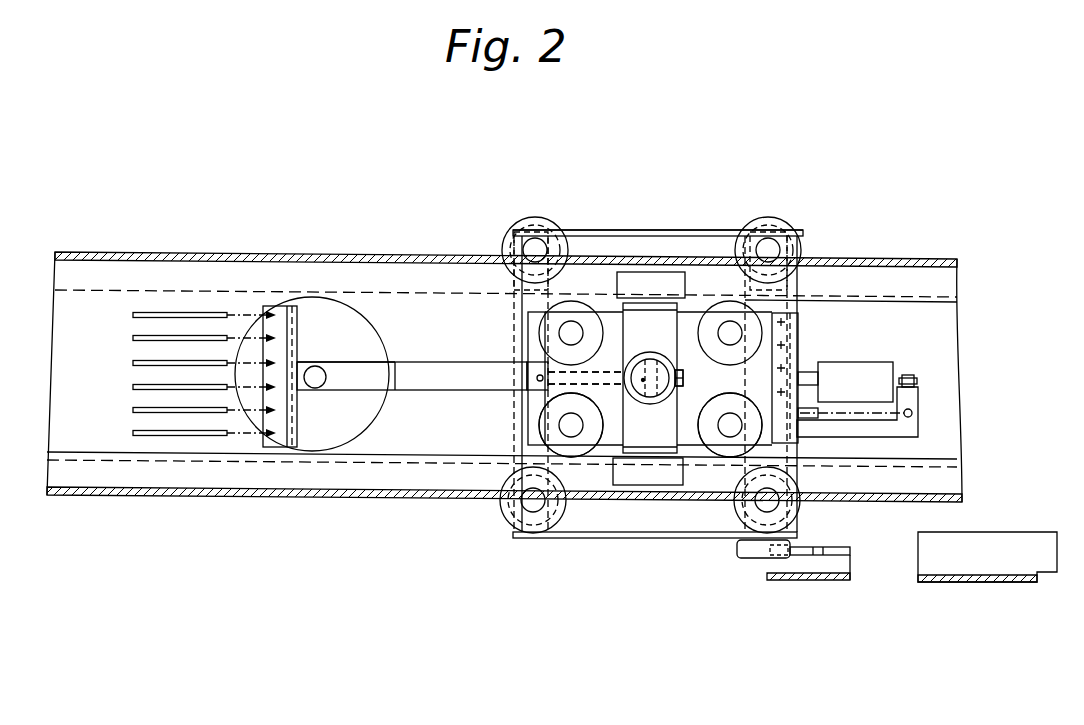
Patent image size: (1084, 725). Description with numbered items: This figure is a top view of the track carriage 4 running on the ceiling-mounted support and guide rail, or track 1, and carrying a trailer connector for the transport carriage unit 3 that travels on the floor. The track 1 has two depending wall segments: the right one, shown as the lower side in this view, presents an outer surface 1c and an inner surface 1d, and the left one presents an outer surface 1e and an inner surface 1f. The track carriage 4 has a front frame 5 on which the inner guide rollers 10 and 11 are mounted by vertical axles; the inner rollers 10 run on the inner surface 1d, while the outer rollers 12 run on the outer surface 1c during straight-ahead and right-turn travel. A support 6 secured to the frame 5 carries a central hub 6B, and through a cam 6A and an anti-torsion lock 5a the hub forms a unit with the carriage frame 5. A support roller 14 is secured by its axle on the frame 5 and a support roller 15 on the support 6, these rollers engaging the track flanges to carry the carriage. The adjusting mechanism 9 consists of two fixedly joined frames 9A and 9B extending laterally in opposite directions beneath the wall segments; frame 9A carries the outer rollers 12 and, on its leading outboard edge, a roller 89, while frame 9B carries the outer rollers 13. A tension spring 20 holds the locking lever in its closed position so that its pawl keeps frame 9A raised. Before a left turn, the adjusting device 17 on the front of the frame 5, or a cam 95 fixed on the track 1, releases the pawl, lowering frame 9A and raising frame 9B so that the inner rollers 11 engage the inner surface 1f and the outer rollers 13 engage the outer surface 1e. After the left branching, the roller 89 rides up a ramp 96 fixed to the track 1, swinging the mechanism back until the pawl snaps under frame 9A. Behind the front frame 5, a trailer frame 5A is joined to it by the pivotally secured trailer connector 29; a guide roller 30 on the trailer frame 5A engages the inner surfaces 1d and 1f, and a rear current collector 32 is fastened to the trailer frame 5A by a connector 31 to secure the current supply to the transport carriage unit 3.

The support and guide rail 1 is at (75, 254).
The outer surface 1c is at (948, 465).
The inner surface 1d is at (948, 458).
The outer surface 1e is at (940, 293).
The inner surface 1f is at (940, 303).
The transport carriage unit 3 is at (643, 381).
The track carriage 4 is at (607, 397).
The front frame 5 is at (800, 337).
The trailer frame 5A is at (341, 362).
The anti-torsion lock 5a is at (681, 362).
The support 6 is at (670, 307).
The cam 6A is at (684, 378).
The central hub 6B is at (638, 353).
The adjusting mechanism 9 is at (575, 224).
The frame 9A is at (574, 542).
The frame 9B is at (598, 228).
The inner rollers 10 is at (543, 432).
The inner rollers 11 is at (540, 328).
The outer rollers 12 is at (505, 510).
The outer rollers 13 is at (530, 217).
The support roller 14 is at (660, 473).
The support roller 15 is at (628, 277).
The adjusting device 17 is at (847, 370).
The tension spring 20 is at (875, 412).
The trailer connector 29 is at (422, 372).
The guide roller 30 is at (343, 300).
The connector 31 is at (270, 306).
The rear current collector 32 is at (133, 433).
The roller 89 is at (755, 558).
The cam 95 is at (840, 580).
The ramp 96 is at (1005, 582).